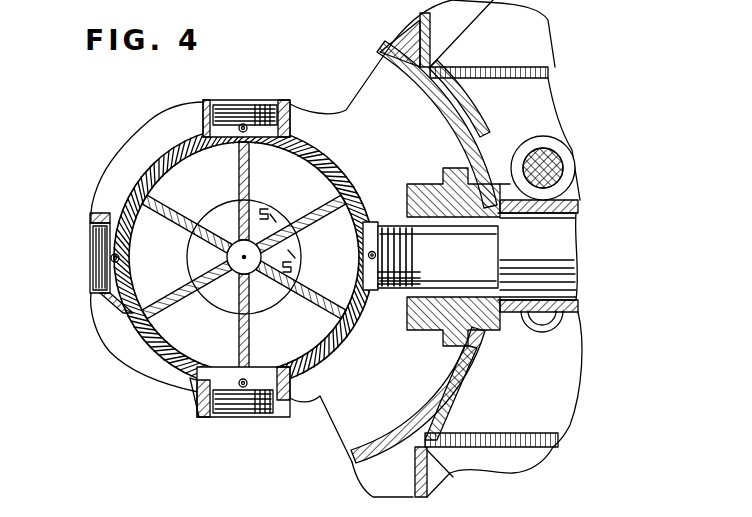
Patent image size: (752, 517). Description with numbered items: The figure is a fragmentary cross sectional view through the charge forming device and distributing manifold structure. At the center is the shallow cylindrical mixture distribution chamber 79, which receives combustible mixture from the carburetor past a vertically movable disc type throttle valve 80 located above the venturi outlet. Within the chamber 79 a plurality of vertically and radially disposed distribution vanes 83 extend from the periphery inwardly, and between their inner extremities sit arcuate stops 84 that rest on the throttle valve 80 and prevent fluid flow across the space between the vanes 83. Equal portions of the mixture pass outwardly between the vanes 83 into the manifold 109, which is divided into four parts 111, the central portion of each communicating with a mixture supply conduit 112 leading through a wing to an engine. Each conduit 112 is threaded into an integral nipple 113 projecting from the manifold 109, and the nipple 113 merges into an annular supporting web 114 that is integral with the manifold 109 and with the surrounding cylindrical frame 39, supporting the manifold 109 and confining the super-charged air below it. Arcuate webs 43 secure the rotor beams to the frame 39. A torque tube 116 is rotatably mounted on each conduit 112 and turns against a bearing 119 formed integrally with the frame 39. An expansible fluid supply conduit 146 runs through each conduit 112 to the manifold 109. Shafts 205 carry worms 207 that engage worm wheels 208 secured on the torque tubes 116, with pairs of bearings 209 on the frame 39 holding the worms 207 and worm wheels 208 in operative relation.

The casing or frame 39 is at (420, 418).
The arcuate webs 43 is at (466, 116).
The mixture distribution chamber 79 is at (190, 170).
The throttle valve 80 is at (266, 293).
The distribution vanes 83 is at (207, 378).
The stops 84 is at (230, 280).
The manifold 109 is at (322, 395).
The manifold parts 111 is at (357, 178).
The mixture supply conduit 112 is at (438, 257).
The nipple 113 is at (377, 320).
The annular supporting web 114 is at (350, 117).
The torque tube 116 is at (560, 250).
The bearing 119 is at (500, 333).
The expansible fluid supply conduit 146 is at (261, 102).
The shafts 205 is at (553, 170).
The worms 207 is at (562, 150).
The worm wheels 208 is at (567, 207).
The bearings 209 is at (496, 158).